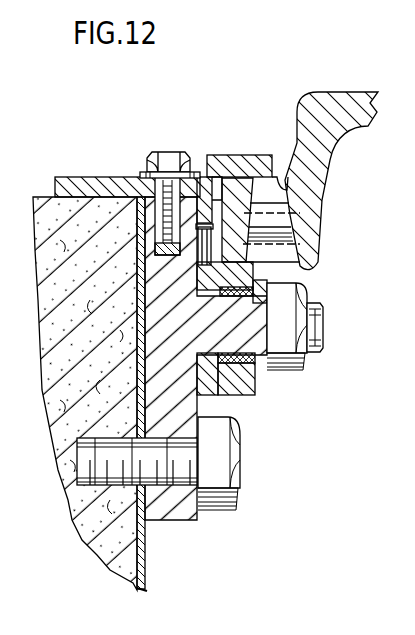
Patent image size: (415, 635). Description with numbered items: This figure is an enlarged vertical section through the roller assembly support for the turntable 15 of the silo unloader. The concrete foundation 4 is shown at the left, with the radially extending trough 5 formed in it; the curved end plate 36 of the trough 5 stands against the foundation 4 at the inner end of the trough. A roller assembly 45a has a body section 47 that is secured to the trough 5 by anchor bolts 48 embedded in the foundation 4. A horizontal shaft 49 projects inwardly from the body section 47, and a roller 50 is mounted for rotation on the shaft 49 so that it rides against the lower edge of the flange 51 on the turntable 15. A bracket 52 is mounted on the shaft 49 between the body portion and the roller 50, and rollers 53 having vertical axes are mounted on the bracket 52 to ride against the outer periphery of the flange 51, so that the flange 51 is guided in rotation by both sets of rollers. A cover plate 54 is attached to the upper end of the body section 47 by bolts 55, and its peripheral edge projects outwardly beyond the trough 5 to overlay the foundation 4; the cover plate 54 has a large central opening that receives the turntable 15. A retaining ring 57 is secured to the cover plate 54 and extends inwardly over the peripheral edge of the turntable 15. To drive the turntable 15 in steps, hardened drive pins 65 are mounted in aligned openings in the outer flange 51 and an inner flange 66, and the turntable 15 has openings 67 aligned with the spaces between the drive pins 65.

The foundation 4 is at (47, 196).
The trough 5 is at (148, 591).
The turntable 15 is at (338, 96).
The curved end plate 36 is at (146, 553).
The roller assembly 45a is at (318, 292).
The body section 47 is at (153, 343).
The anchor bolts 48 is at (242, 502).
The horizontal shaft 49 is at (255, 335).
The roller 50 is at (250, 386).
The flange 51 is at (237, 195).
The bracket 52 is at (212, 393).
The rollers 53 is at (199, 172).
The cover plate 54 is at (108, 177).
The bolts 55 is at (172, 152).
The retaining ring 57 is at (213, 155).
The drive pins 65 is at (284, 220).
The inner flange 66 is at (310, 249).
The openings 67 is at (282, 187).